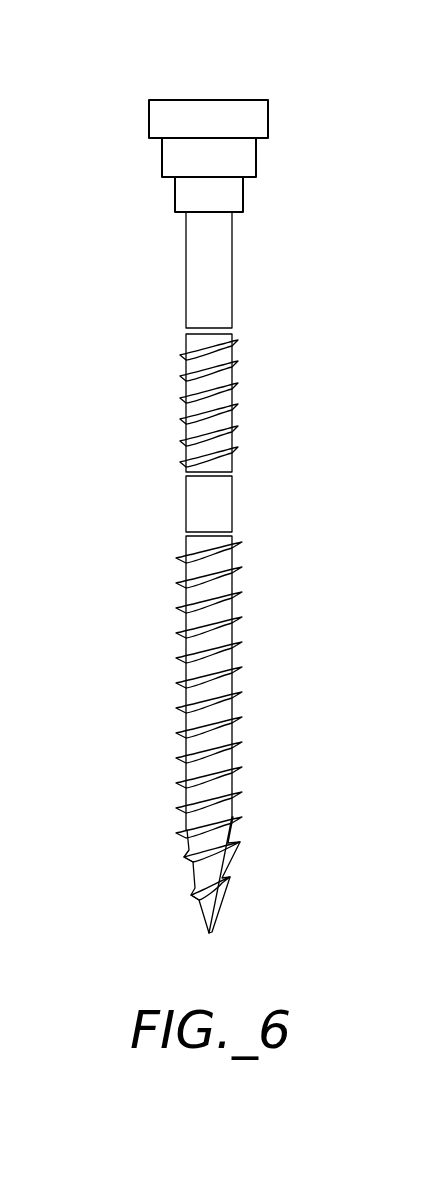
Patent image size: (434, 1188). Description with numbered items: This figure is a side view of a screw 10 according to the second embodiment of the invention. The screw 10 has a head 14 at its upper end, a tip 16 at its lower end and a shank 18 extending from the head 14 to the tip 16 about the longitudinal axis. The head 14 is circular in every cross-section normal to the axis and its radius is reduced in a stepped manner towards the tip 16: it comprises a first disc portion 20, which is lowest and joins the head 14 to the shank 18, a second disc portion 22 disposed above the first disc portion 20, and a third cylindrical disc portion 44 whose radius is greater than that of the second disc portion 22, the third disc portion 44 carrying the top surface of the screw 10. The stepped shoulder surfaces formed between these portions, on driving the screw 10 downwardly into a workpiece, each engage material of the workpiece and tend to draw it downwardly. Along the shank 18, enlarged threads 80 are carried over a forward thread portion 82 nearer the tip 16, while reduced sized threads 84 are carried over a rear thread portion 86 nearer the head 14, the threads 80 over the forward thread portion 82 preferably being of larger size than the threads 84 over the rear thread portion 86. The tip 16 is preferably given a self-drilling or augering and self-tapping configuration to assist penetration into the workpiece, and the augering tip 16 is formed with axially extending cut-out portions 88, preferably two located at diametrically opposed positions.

The screw 10 is at (155, 66).
The head 14 is at (281, 103).
The third cylindrical disc portion 44 is at (147, 115).
The second disc portion 22 is at (156, 155).
The first disc portion 20 is at (169, 200).
The shank 18 is at (226, 267).
The rear thread portion 86 is at (243, 340).
The reduced sized threads 84 is at (232, 425).
The forward thread portion 82 is at (248, 642).
The enlarged threads 80 is at (233, 688).
The cut-out portions 88 is at (235, 860).
The tip 16 is at (214, 935).